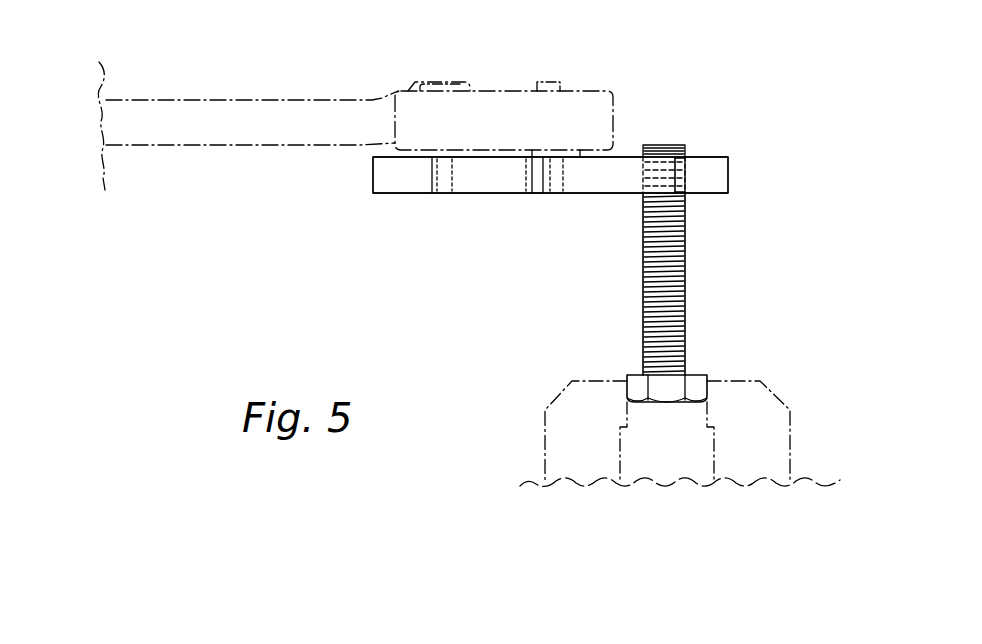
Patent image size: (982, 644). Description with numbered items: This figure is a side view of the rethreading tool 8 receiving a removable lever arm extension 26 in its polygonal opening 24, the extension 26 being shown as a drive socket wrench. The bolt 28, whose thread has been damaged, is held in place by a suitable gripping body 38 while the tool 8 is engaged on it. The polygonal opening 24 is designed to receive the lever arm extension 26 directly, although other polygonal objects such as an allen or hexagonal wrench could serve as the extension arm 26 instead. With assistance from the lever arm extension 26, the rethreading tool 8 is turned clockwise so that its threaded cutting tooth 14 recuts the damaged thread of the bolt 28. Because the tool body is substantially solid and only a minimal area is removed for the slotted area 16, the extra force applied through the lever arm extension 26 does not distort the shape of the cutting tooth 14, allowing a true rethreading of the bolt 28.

The rethreading tool 8 is at (352, 205).
The threaded cutting tooth 14 is at (643, 176).
The slotted area 16 is at (688, 174).
The polygonal opening 24 is at (560, 195).
The removable lever arm extension 26 is at (277, 100).
The bolt 28 is at (642, 300).
The gripping body 38 is at (757, 388).